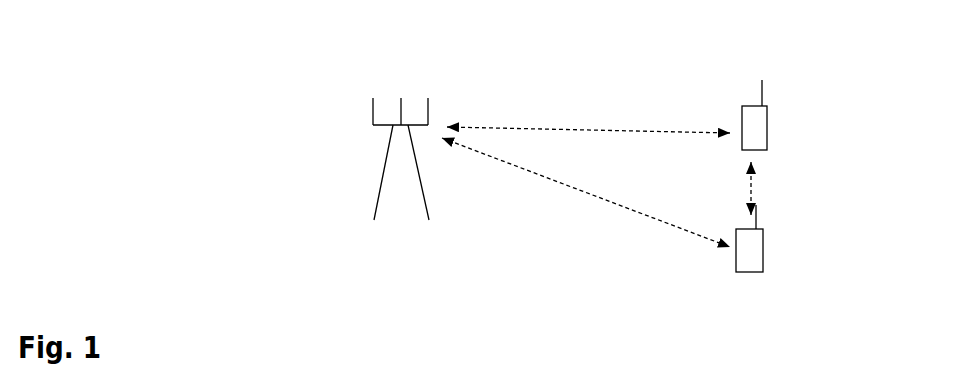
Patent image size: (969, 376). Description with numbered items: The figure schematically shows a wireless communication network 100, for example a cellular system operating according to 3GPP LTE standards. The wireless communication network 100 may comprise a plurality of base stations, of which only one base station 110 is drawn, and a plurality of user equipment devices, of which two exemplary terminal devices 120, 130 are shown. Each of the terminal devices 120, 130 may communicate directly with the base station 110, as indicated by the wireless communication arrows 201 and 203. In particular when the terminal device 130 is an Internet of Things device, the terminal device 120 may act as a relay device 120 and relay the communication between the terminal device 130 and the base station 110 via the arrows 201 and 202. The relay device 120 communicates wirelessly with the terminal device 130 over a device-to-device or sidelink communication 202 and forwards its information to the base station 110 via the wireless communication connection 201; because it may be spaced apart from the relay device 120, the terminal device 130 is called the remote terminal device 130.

The wireless communication network 100 is at (107, 57).
The base station 110 is at (367, 95).
The terminal device 120 is at (767, 120).
The terminal device 130 is at (763, 252).
The wireless communication arrow 201 is at (570, 125).
The wireless communication arrow 202 is at (757, 189).
The wireless communication arrow 203 is at (565, 193).